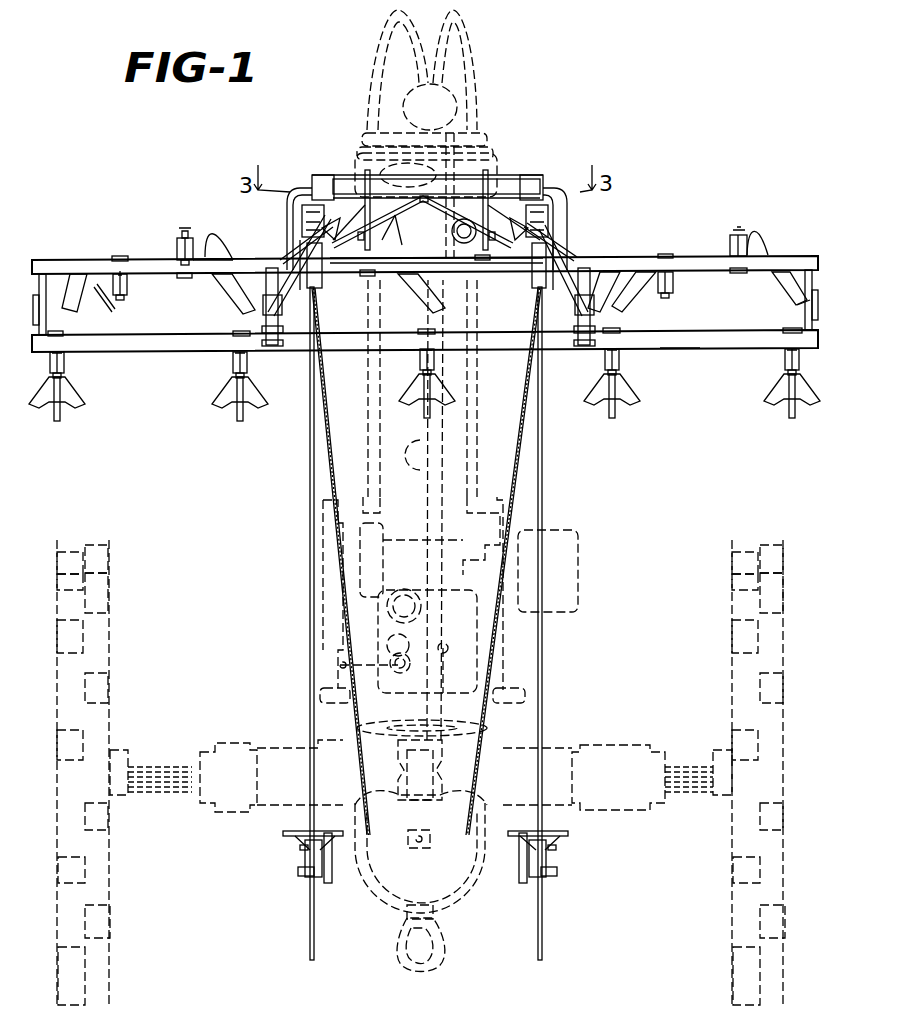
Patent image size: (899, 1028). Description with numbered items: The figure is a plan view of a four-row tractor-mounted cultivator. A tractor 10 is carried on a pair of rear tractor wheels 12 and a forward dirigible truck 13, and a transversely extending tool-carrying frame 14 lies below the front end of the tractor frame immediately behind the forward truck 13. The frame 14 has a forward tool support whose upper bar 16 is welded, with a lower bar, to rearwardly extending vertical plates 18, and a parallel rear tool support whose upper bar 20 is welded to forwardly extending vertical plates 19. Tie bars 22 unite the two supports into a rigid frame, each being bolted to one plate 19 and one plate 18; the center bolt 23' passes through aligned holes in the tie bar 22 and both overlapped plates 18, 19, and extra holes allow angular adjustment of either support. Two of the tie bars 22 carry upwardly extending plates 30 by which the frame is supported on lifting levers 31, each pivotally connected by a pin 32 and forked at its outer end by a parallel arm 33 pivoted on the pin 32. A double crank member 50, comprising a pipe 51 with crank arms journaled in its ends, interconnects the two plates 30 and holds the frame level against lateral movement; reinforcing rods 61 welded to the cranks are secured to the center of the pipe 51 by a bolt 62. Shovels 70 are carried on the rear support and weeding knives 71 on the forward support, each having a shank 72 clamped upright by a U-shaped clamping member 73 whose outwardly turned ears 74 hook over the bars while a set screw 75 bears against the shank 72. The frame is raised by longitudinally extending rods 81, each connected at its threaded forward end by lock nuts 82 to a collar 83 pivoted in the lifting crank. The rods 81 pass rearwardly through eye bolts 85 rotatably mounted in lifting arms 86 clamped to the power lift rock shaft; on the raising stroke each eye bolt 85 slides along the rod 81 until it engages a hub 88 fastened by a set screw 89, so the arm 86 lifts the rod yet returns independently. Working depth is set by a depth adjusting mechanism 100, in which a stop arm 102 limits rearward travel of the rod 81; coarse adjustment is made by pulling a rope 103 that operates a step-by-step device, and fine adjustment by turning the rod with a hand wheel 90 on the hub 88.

The tractor 10 is at (368, 551).
The rear tractor wheels 12 is at (108, 672).
The forward dirigible truck 13 is at (488, 100).
The tool-carrying frame 14 is at (681, 358).
The upper bar 16 is at (608, 270).
The rearwardly extending vertical plates 18 is at (90, 282).
The forwardly extending vertical plates 19 is at (36, 318).
The upper bar 20 is at (735, 340).
The tie bars 22 is at (62, 283).
The center bolt 23' is at (439, 308).
The upwardly extending plates 30 is at (270, 350).
The lifting levers 31 is at (262, 328).
The pins 32 is at (280, 347).
The parallel extending arm 33 is at (280, 315).
The double crank member 50 is at (494, 178).
The pipe 51 is at (458, 188).
The reinforcing rods 61 is at (448, 224).
The bolt 62 is at (424, 203).
The shovels 70 is at (75, 408).
The weeding knives 71 is at (216, 237).
The shank 72 is at (178, 242).
The U-shaped clamping member 73 is at (180, 240).
The outwardly turned ear 74 is at (184, 280).
The set screw 75 is at (185, 229).
The longitudinally extending rods 81 is at (310, 659).
The lock nuts 82 is at (330, 236).
The collar 83 is at (302, 224).
The eye bolts 85 is at (308, 874).
The lifting arms 86 is at (332, 876).
The hub 88 is at (305, 860).
The set screw 89 is at (300, 848).
The hand wheel 90 is at (303, 833).
The depth adjusting mechanism 100 is at (336, 296).
The stop arm 102 is at (318, 290).
The rope 103 is at (335, 455).